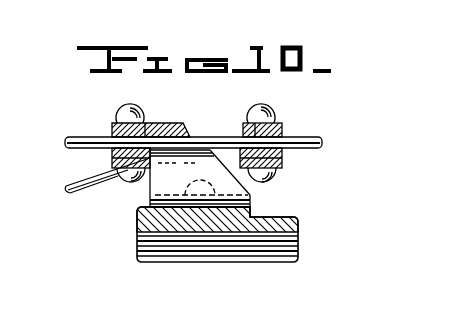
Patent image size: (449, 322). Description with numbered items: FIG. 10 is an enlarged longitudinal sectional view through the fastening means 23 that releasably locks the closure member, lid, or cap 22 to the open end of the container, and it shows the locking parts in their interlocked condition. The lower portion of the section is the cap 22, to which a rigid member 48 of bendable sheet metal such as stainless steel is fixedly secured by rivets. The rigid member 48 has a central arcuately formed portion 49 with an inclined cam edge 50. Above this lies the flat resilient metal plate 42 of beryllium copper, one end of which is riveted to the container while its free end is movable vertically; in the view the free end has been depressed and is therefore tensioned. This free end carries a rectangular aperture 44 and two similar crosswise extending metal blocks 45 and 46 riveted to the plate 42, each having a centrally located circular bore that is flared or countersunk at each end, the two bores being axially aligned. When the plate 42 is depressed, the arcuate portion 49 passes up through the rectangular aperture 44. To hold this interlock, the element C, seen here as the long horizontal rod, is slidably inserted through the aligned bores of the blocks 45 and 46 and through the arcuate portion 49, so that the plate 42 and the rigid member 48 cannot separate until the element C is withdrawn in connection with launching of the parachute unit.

The element C is at (77, 137).
The block 45 is at (110, 125).
The fastening means 23 is at (213, 108).
The rectangular aperture 44 is at (232, 165).
The block 46 is at (279, 124).
The resilient metal plate 42 is at (72, 176).
The arcuately formed portion 49 is at (168, 175).
The inclined cam edge 50 is at (250, 185).
The rigid member 48 is at (250, 199).
The closure member, lid, or cap 22 is at (213, 252).